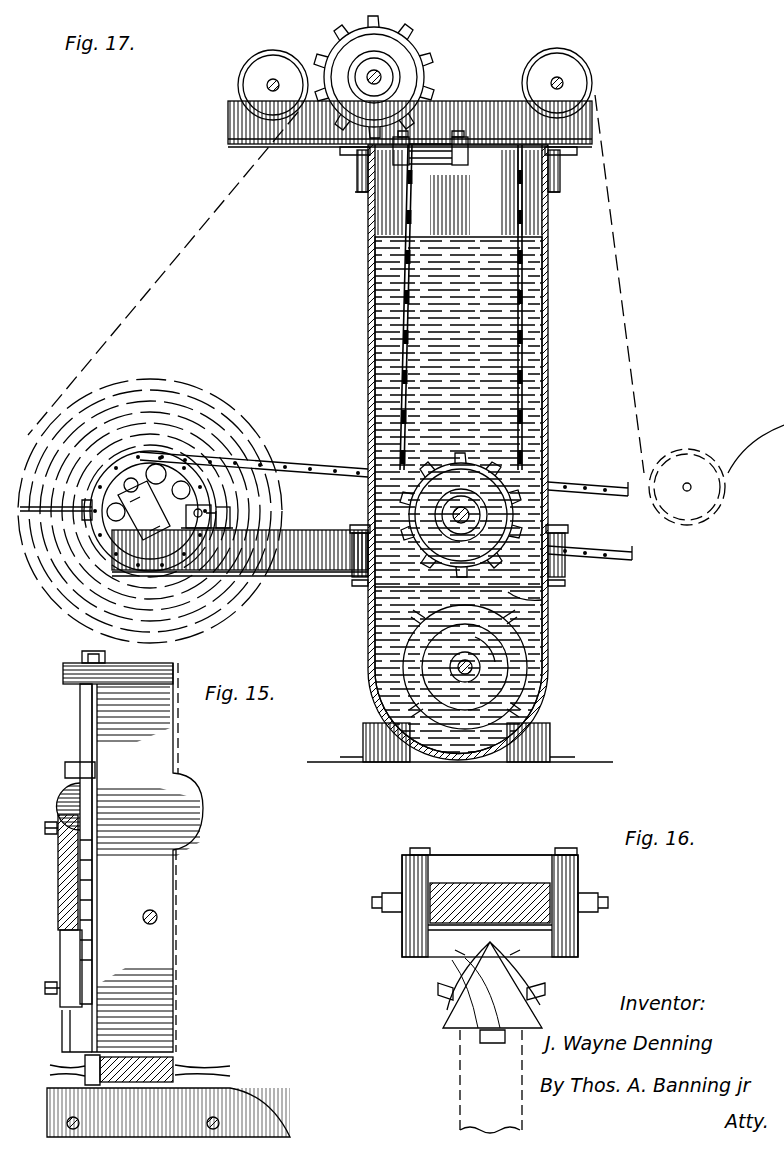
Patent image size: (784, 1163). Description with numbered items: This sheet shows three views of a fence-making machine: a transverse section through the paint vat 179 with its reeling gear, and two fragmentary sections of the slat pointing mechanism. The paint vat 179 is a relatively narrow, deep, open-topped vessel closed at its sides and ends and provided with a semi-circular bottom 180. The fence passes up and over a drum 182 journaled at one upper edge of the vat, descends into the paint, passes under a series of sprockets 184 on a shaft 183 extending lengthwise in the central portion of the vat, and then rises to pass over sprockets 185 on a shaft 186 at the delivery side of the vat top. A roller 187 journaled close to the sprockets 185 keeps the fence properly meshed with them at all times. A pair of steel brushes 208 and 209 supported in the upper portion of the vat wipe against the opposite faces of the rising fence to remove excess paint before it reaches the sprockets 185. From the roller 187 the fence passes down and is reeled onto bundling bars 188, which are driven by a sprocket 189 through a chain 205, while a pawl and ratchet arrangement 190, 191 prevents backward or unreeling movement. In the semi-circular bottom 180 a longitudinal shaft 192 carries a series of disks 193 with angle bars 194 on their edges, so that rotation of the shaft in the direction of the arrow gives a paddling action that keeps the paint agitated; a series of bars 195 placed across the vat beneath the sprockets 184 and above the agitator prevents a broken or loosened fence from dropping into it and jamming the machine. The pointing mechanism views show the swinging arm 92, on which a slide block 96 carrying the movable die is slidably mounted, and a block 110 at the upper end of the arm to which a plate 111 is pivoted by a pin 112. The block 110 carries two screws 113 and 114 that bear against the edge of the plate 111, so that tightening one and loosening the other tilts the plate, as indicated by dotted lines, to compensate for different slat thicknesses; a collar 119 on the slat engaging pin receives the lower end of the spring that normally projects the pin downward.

In FIG. 16, the swinging arm 92 is at (495, 890).
In FIG. 16, the slide block 96 is at (415, 940).
In FIG. 15, the block 110 is at (60, 884).
In FIG. 15, the plate 111 is at (147, 857).
In FIG. 15, the pin 112 is at (158, 917).
In FIG. 15, the screw 113 is at (50, 822).
In FIG. 15, the screw 114 is at (48, 990).
In FIG. 15, the collar 119 is at (72, 968).
In FIG. 17, the paint vat 179 is at (360, 350).
In FIG. 17, the semi-circular bottom 180 is at (497, 752).
In FIG. 17, the drum 182 is at (576, 86).
In FIG. 17, the shaft 183 is at (469, 517).
In FIG. 17, the sprockets 184 is at (422, 517).
In FIG. 17, the sprockets 185 is at (394, 50).
In FIG. 17, the shaft 186 is at (368, 80).
In FIG. 17, the roller 187 is at (238, 87).
In FIG. 17, the bars 188 is at (112, 503).
In FIG. 17, the sprocket 189 is at (160, 477).
In FIG. 17, the pawl 190 is at (199, 507).
In FIG. 17, the ratchet 191 is at (168, 489).
In FIG. 17, the shaft 192 is at (488, 667).
In FIG. 17, the disks 193 is at (499, 654).
In FIG. 17, the angle bars 194 is at (528, 707).
In FIG. 17, the bars 195 is at (545, 600).
In FIG. 17, the chain 205 is at (340, 452).
In FIG. 17, the steel brush 208 is at (405, 166).
In FIG. 17, the steel brush 209 is at (445, 166).